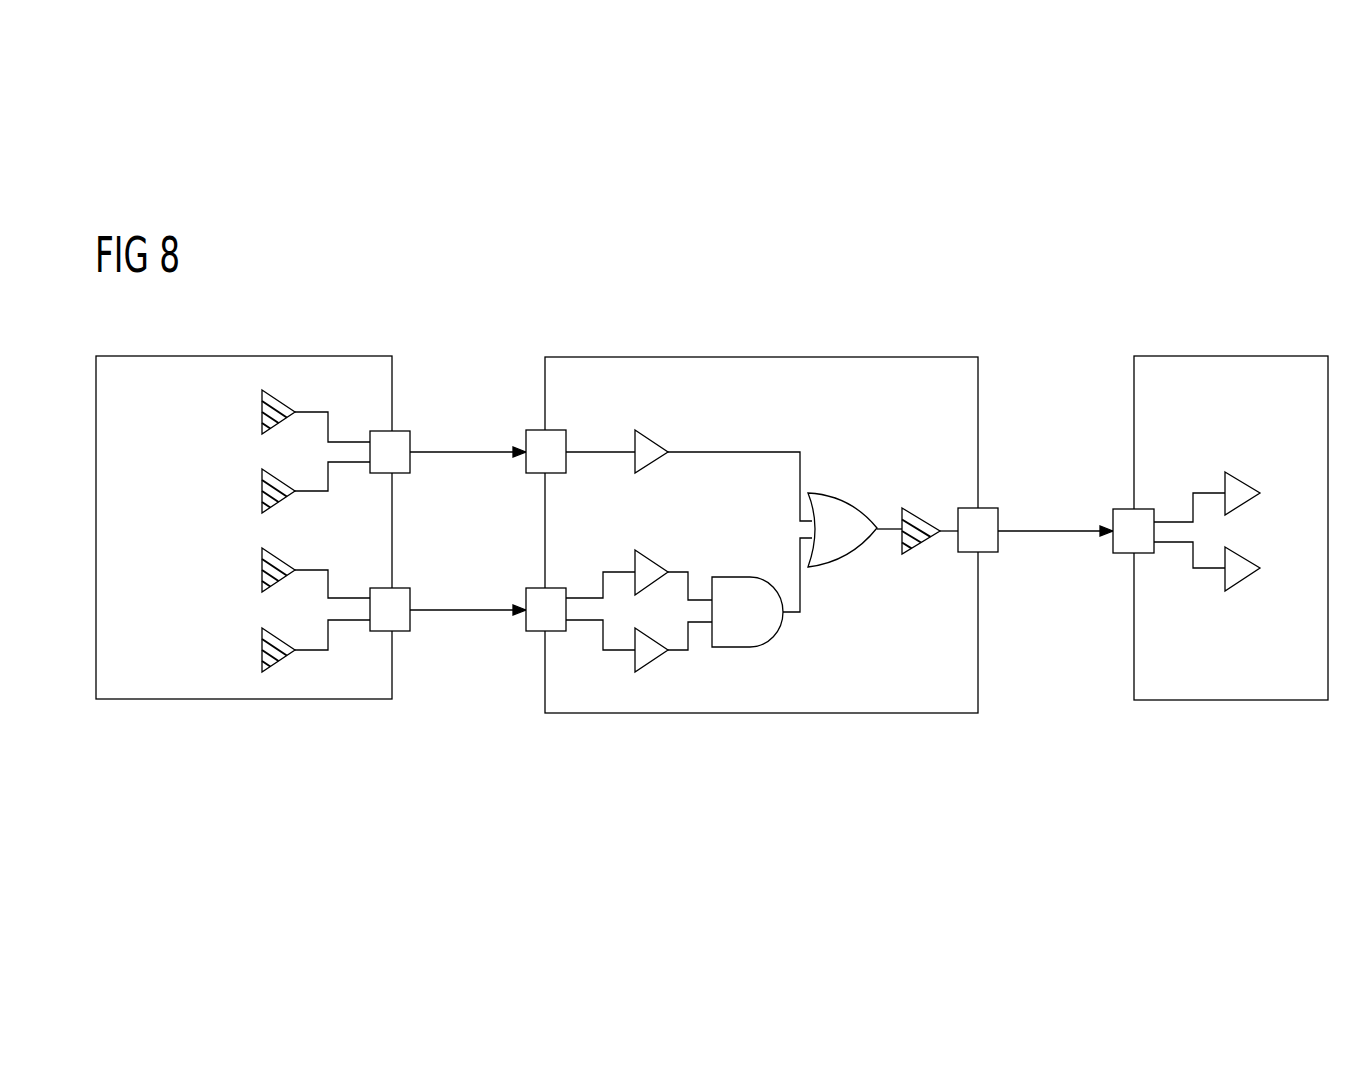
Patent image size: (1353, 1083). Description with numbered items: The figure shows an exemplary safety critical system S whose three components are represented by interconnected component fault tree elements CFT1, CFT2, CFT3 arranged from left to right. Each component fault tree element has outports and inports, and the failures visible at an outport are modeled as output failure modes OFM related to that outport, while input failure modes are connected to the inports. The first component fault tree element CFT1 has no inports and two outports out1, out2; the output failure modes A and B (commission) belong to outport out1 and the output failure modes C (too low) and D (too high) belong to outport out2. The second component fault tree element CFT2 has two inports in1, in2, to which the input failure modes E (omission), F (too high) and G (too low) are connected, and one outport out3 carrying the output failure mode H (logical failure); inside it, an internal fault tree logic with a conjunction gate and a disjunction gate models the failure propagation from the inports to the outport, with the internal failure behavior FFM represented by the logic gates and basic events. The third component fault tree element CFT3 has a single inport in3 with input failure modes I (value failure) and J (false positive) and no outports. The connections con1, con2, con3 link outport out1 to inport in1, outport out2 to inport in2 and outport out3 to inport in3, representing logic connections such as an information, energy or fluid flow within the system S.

The system S is at (1152, 278).
The component fault tree element CFT1 is at (185, 699).
The component fault tree element CFT2 is at (867, 713).
The component fault tree element CFT3 is at (1245, 700).
The output failure mode OFM is at (283, 664).
The function failure mode FFM is at (657, 660).
The outport out1 is at (373, 433).
The outport out2 is at (373, 592).
The outport out3 is at (960, 511).
The inport in1 is at (556, 470).
The inport in2 is at (556, 628).
The inport in3 is at (1148, 549).
The first connection con1 is at (468, 438).
The second connection con2 is at (468, 596).
The third connection con3 is at (1055, 517).